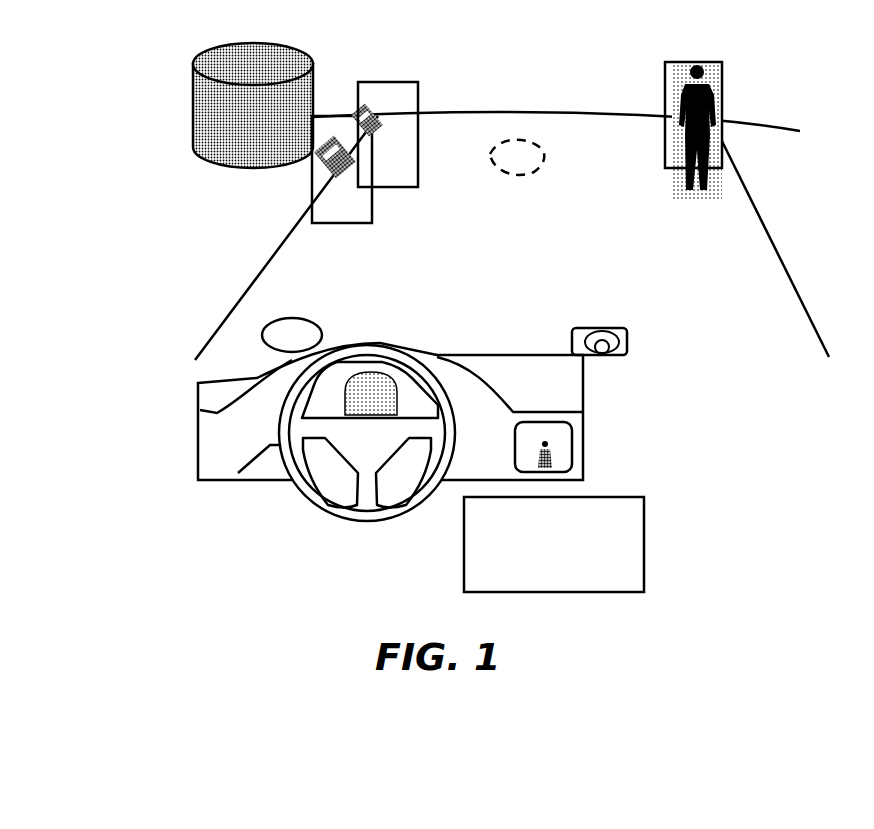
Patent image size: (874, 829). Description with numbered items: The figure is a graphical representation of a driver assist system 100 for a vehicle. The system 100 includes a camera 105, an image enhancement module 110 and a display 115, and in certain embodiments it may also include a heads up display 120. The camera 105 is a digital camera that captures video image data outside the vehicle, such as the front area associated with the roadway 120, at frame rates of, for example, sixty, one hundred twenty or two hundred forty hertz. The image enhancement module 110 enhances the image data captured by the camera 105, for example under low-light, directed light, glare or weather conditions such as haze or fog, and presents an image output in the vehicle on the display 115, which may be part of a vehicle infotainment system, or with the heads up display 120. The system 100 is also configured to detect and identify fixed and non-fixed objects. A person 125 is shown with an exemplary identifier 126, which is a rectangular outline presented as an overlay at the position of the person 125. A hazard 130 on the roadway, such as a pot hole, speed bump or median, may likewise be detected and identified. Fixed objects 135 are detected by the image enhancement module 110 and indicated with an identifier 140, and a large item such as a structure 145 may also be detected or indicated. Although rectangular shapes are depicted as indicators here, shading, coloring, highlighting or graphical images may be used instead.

The system 100 is at (510, 336).
The camera 105 is at (630, 336).
The image enhancement module 110 is at (645, 524).
The display 115 is at (575, 440).
The heads up display 120 is at (747, 233).
The person 125 is at (722, 109).
The identifier 126 is at (722, 76).
The hazard 130 is at (545, 167).
The fixed objects 135 is at (380, 113).
The identifier 140 is at (416, 94).
The structure 145 is at (342, 76).